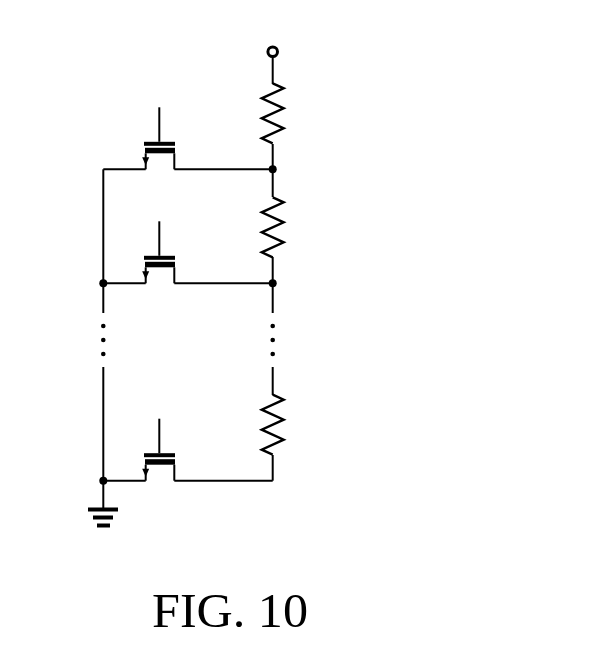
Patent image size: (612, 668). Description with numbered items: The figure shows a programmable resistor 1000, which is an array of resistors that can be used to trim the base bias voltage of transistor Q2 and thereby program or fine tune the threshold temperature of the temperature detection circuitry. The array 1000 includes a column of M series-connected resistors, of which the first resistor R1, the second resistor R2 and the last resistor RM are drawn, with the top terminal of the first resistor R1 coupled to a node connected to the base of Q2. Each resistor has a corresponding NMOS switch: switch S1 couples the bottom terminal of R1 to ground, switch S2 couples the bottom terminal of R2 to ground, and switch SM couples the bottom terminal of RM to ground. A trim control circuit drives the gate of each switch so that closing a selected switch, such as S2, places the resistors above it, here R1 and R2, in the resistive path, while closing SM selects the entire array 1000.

The programmable resistor 1000 is at (284, 272).
The first resistor R1 is at (285, 113).
The second resistor R2 is at (286, 227).
The Mth resistor RM is at (288, 425).
The first switch S1 is at (158, 126).
The second switch S2 is at (158, 239).
The Mth switch SM is at (158, 437).